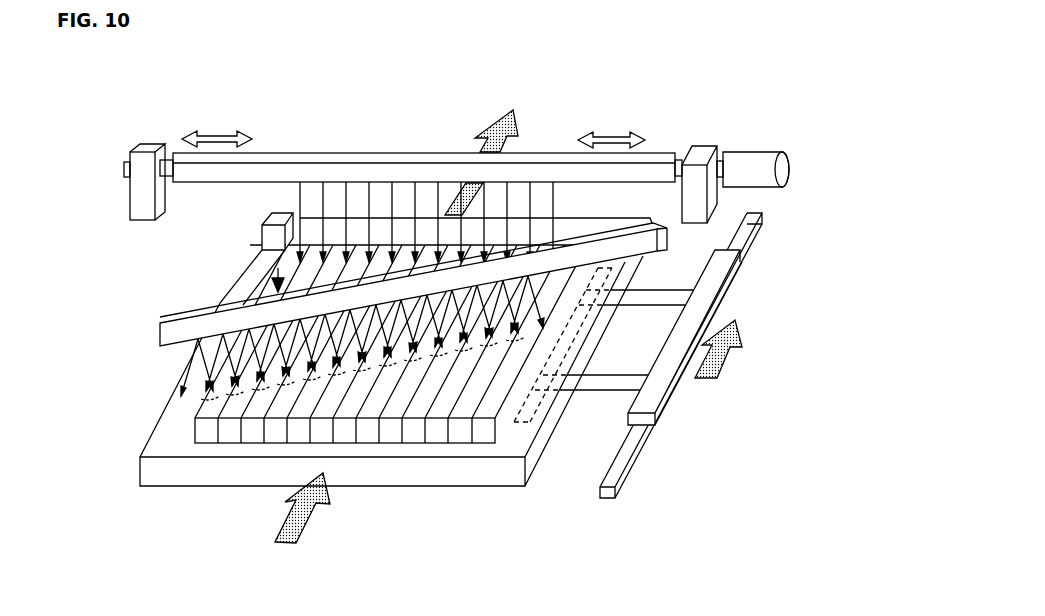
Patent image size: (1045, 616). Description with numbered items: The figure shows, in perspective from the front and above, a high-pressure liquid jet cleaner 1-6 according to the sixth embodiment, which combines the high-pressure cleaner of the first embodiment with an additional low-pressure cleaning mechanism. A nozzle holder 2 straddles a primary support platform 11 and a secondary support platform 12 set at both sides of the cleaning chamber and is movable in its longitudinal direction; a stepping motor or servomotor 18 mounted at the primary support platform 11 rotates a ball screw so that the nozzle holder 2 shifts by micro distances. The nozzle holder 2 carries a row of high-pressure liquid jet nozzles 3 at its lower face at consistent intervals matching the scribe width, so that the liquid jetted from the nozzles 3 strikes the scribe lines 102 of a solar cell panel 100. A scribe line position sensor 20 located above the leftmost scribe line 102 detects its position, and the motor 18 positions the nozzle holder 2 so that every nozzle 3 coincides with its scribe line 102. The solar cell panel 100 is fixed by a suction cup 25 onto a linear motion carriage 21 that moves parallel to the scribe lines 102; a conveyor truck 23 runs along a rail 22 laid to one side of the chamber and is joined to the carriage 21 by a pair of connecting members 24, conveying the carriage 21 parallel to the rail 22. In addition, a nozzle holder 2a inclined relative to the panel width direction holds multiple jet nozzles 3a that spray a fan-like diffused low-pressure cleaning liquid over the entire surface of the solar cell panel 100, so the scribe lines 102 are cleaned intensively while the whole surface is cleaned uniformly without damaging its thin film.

The high-pressure liquid jet cleaner 1-6 is at (521, 99).
The nozzle holder 2 is at (651, 152).
The nozzle holder 2a is at (668, 243).
The high-pressure liquid jet nozzles 3 is at (320, 183).
The jet nozzles 3a is at (212, 338).
The primary support platform 11 is at (709, 200).
The secondary support platform 12 is at (150, 220).
The stepping motor or servomotor 18 is at (750, 160).
The scribe line position sensor 20 is at (265, 240).
The linear motion carriage 21 is at (522, 442).
The rail 22 is at (624, 460).
The conveyor truck 23 is at (667, 382).
The connecting members 24 is at (627, 374).
The suction cup 25 is at (573, 407).
The solar cell panel 100 is at (275, 437).
The scribe lines 102 is at (317, 410).